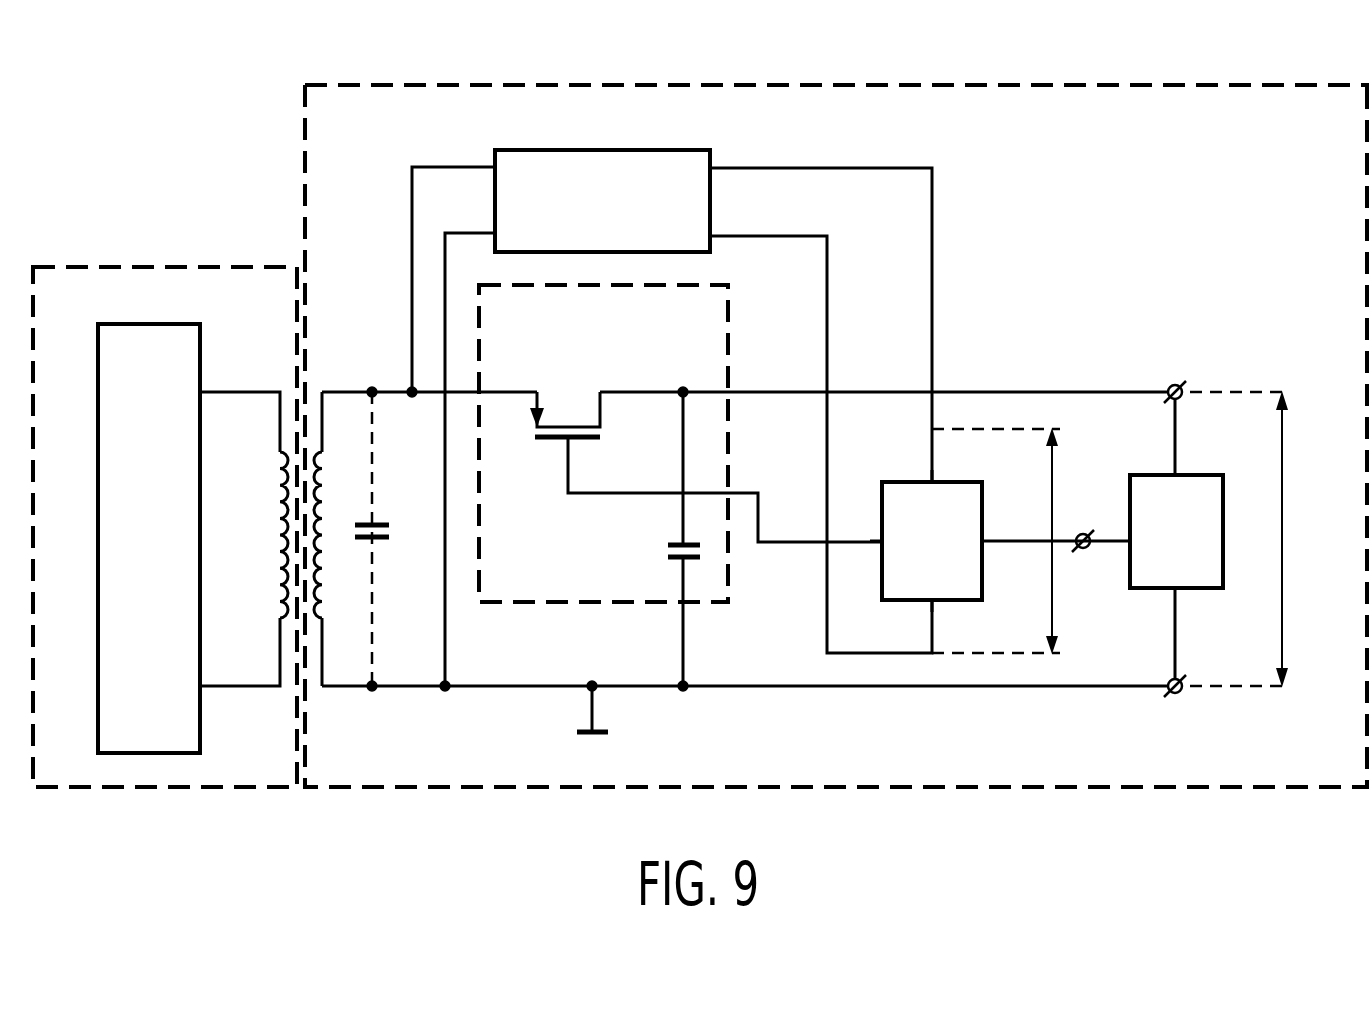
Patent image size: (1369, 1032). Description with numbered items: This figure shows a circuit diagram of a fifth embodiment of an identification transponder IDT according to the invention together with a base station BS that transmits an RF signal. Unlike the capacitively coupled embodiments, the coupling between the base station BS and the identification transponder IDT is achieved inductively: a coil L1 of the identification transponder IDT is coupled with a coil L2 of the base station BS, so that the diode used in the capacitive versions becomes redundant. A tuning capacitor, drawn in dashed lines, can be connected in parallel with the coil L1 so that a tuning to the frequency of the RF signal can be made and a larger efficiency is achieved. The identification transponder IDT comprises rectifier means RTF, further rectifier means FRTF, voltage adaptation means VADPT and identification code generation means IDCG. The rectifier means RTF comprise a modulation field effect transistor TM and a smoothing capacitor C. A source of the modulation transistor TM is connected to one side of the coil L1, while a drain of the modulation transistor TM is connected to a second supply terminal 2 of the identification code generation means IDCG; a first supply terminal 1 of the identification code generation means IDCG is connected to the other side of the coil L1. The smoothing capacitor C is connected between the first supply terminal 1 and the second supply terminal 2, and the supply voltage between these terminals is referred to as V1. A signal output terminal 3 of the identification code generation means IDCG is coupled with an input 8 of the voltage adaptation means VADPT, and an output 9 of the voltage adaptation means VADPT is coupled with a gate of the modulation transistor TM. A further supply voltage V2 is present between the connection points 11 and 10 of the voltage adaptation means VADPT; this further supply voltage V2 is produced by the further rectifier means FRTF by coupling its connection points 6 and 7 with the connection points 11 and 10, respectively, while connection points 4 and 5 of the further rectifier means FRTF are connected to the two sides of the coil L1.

The first supply terminal 1 is at (1176, 694).
The second supply terminal 2 is at (1176, 384).
The signal output terminal 3 is at (1083, 533).
The connection point 4 is at (494, 165).
The connection point 5 is at (494, 232).
The connection point 6 is at (712, 166).
The connection point 7 is at (712, 234).
The input 8 is at (986, 540).
The output 9 is at (880, 542).
The connection point 10 is at (940, 601).
The connection point 11 is at (930, 481).
The identification transponder IDT is at (653, 85).
The base station BS is at (150, 267).
The RF signal RF is at (189, 538).
The coil L1 is at (318, 497).
The coil L2 is at (283, 541).
The further rectifier means FRTF is at (597, 150).
The rectifier means RTF is at (728, 312).
The modulation field effect transistor TM is at (548, 441).
The smoothing capacitor C is at (668, 552).
The voltage adaptation means VADPT is at (958, 482).
The identification code generation means IDCG is at (1208, 590).
The supply voltage V1 is at (1257, 539).
The further supply voltage V2 is at (1004, 541).